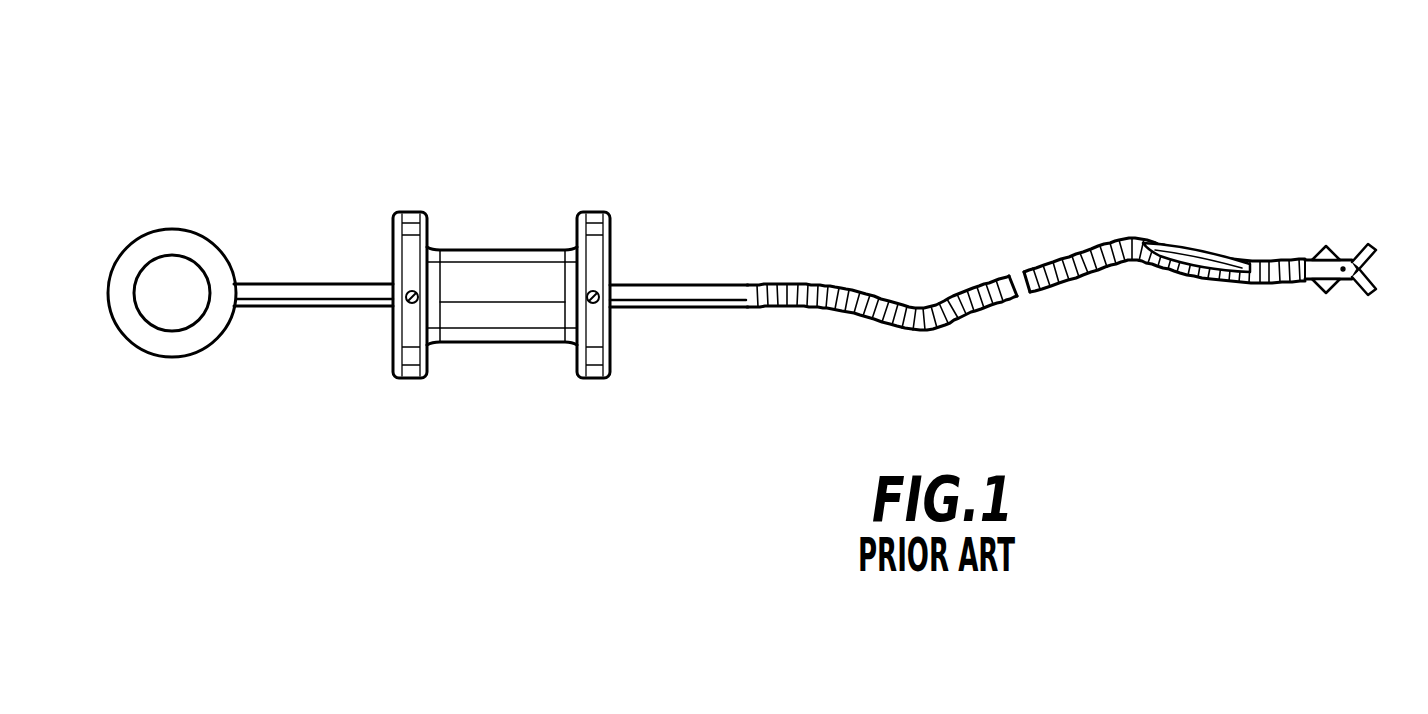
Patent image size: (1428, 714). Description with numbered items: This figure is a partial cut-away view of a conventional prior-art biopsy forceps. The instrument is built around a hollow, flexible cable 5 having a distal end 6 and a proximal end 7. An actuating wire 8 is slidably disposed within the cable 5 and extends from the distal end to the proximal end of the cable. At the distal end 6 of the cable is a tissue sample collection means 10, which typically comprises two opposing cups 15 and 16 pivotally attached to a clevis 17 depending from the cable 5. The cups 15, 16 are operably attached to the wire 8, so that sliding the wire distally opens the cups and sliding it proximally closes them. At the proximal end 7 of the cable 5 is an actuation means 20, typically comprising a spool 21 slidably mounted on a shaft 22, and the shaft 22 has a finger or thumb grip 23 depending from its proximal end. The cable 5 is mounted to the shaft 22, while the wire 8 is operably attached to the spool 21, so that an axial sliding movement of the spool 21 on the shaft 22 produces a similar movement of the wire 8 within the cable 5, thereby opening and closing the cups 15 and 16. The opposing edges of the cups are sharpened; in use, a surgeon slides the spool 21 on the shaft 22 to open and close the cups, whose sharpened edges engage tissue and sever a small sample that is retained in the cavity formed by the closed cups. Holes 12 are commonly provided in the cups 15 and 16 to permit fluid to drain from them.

The hollow, flexible cable 5 is at (1078, 249).
The distal end 6 is at (1273, 287).
The proximal end 7 is at (713, 308).
The actuating wire 8 is at (1182, 248).
The tissue sample collection means 10 is at (1324, 268).
The holes 12 is at (1363, 248).
The cup 15 is at (1368, 247).
The cup 16 is at (1373, 293).
The clevis 17 is at (1312, 290).
The actuation means 20 is at (501, 238).
The spool 21 is at (412, 376).
The shaft 22 is at (320, 306).
The finger or thumb grip 23 is at (152, 353).